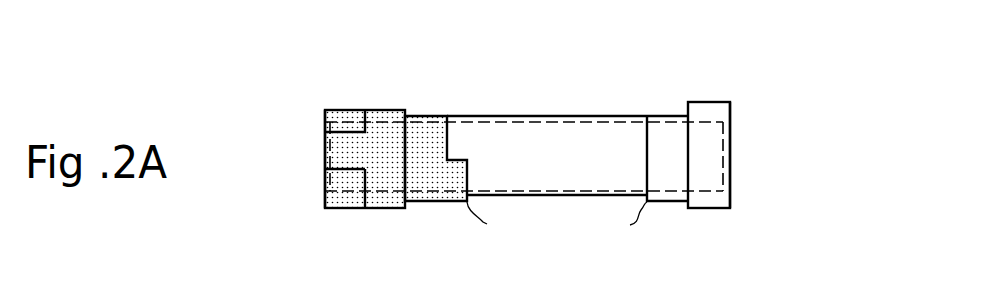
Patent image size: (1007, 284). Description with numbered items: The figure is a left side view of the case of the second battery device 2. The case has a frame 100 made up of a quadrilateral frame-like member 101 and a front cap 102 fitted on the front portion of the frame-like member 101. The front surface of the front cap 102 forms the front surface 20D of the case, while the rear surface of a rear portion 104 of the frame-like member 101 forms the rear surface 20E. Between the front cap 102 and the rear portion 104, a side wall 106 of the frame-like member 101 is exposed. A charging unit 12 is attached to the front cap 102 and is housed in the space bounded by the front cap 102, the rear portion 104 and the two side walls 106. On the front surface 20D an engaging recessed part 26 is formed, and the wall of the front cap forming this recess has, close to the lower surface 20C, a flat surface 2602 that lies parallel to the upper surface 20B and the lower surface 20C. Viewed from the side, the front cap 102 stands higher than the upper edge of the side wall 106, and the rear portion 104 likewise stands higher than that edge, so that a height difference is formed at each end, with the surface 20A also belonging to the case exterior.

The second battery device 2 is at (398, 50).
The front cap 102 is at (326, 113).
The front surface 20D is at (326, 142).
The flat surface 2602 is at (346, 171).
The engaging recessed part 26 is at (348, 179).
The frame 100 is at (524, 137).
The frame-like member 101 is at (464, 127).
The outer peripheral surface (top) 20A is at (500, 121).
The lower surface 20C is at (620, 117).
The upper surface 20B is at (555, 200).
The side wall 106 is at (555, 121).
The rear portion 104 is at (736, 110).
The charging unit 12 is at (723, 140).
The rear surface 20E is at (727, 177).